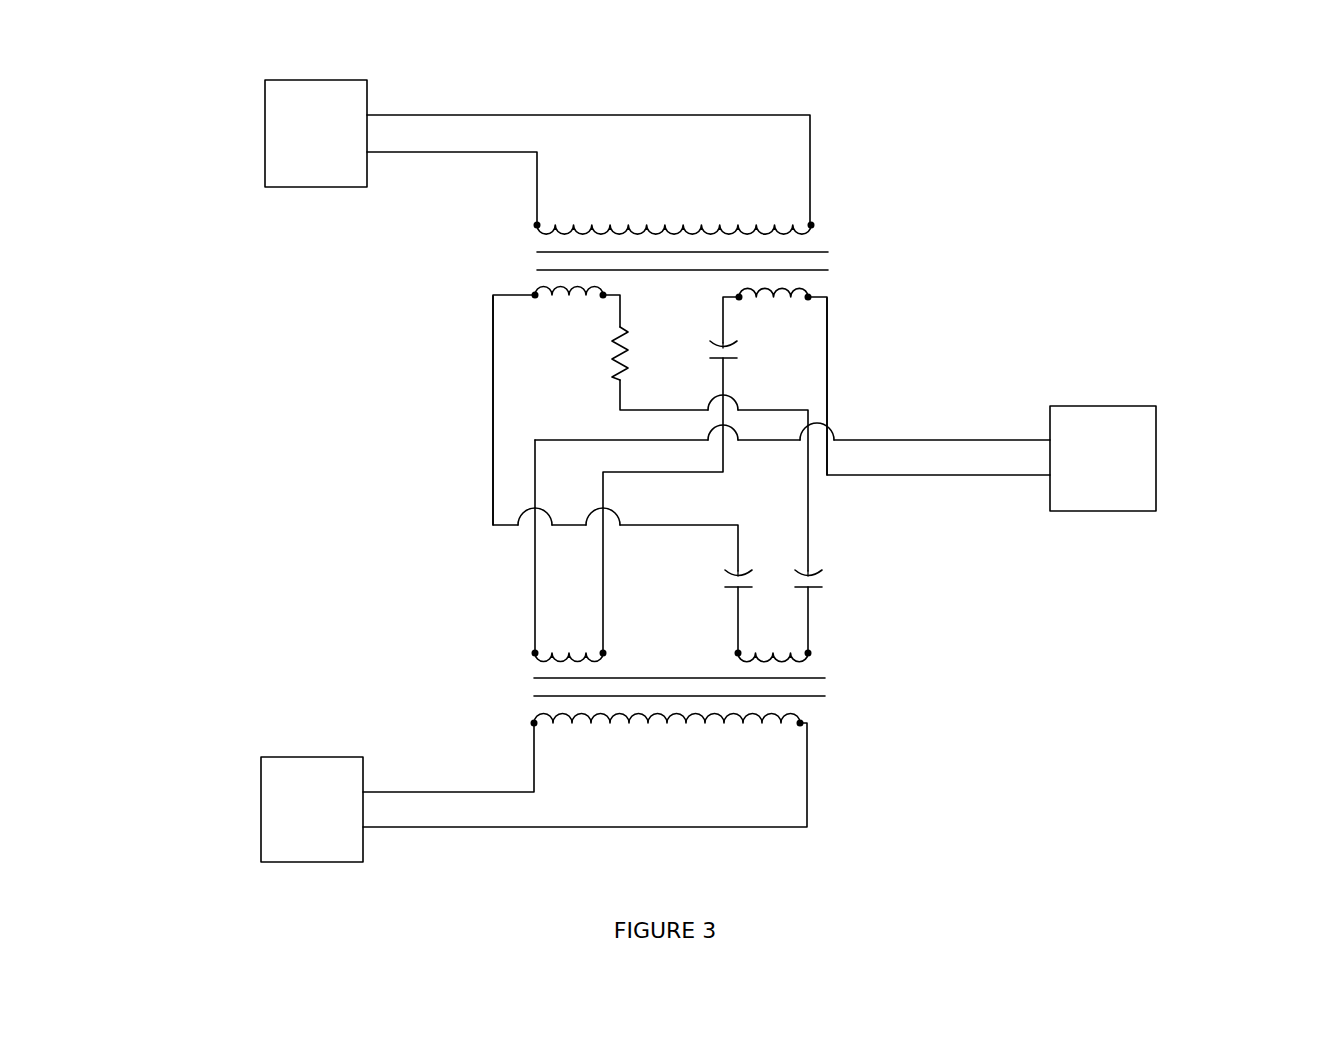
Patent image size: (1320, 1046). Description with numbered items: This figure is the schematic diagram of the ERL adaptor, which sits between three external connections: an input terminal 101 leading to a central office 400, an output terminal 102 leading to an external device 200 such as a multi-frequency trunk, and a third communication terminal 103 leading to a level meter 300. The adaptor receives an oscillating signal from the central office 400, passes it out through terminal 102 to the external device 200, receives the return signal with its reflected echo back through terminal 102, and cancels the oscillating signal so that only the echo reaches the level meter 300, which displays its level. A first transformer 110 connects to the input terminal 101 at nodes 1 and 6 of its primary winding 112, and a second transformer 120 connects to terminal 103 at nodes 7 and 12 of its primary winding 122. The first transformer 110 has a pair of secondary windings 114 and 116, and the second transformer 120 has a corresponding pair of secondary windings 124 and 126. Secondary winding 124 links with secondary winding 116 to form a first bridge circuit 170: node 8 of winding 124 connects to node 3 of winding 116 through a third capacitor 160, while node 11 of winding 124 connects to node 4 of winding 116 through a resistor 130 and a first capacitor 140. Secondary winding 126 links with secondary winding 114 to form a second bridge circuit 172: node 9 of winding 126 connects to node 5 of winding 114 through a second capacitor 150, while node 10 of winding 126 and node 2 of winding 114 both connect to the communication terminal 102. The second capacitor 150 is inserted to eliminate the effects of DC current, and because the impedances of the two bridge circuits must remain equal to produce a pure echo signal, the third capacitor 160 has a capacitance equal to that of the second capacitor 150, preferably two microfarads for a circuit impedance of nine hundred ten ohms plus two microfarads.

The input terminal 101 is at (312, 809).
The output terminal 102 is at (1103, 458).
The third communication terminal 103 is at (316, 133).
The first transformer 110 is at (870, 687).
The primary winding 112 is at (699, 757).
The secondary winding 114 is at (540, 632).
The secondary winding 116 is at (802, 635).
The second transformer 120 is at (880, 263).
The primary winding 122 is at (698, 200).
The secondary winding 124 is at (521, 334).
The secondary winding 126 is at (810, 334).
The resistor 130 is at (643, 348).
The first capacitor 140 is at (832, 581).
The second capacitor 150 is at (703, 350).
The third capacitor 160 is at (719, 587).
The first bridge circuit 170 is at (478, 457).
The second bridge circuit 172 is at (838, 410).
The external device 200 is at (1242, 451).
The level meter 300 is at (165, 130).
The central office 400 is at (162, 806).
The node 1 is at (545, 739).
The node 2 is at (542, 643).
The node 3 is at (748, 643).
The node 4 is at (826, 613).
The node 5 is at (597, 643).
The node 6 is at (794, 738).
The node 7 is at (547, 216).
The node 8 is at (540, 309).
The node 9 is at (745, 310).
The node 10 is at (798, 310).
The node 11 is at (596, 309).
The node 12 is at (799, 216).